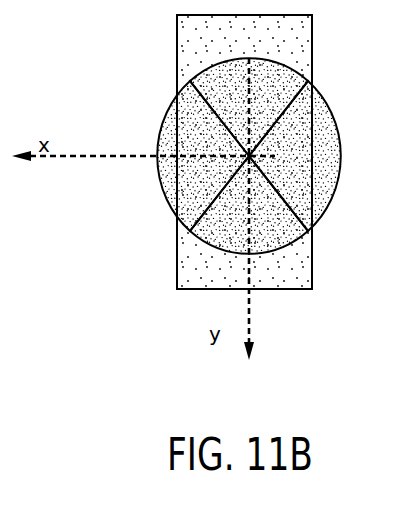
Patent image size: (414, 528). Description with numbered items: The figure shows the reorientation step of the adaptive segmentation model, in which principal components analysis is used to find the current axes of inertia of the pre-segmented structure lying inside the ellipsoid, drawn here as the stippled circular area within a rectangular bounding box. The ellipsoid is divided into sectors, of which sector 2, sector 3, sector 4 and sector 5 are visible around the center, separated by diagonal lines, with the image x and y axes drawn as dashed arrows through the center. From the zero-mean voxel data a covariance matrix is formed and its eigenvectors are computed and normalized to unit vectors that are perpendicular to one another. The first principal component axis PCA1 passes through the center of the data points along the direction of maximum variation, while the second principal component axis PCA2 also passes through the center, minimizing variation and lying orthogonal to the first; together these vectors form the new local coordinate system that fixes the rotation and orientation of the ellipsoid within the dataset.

The sector 2 is at (249, 205).
The sector 3 is at (249, 107).
The sector 4 is at (295, 156).
The sector 5 is at (203, 156).
The first principal component axis PCA1 is at (272, 72).
The second principal component axis PCA2 is at (298, 175).